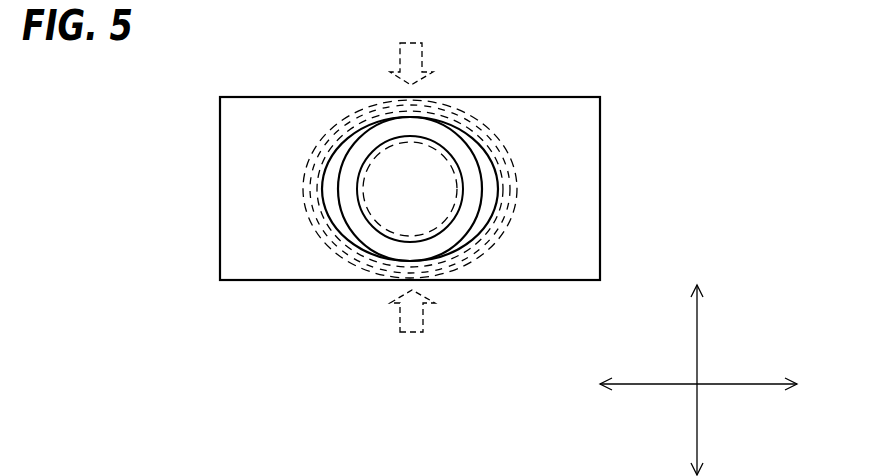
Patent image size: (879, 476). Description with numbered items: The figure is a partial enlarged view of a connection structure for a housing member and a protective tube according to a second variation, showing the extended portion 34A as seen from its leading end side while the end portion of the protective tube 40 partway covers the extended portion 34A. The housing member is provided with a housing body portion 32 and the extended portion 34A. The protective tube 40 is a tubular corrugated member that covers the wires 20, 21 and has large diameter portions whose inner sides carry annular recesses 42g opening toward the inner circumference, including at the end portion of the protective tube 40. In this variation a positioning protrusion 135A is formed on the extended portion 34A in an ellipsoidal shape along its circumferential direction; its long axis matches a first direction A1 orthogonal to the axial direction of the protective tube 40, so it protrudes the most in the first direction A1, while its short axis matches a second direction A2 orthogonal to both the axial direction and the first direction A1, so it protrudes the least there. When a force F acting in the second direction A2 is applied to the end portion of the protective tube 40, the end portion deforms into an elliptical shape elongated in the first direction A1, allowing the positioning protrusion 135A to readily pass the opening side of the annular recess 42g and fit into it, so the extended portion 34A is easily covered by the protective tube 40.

The wire 20 is at (330, 146).
The pin tip portion 21 is at (340, 160).
The housing body portion 32 is at (600, 189).
The extended portion 34A is at (475, 220).
The protective tube 40 is at (507, 147).
The annular recess 42g is at (505, 182).
The positioning protrusion 135A is at (493, 208).
The force F is at (422, 58).
The first direction A1 is at (698, 368).
The second direction A2 is at (714, 375).